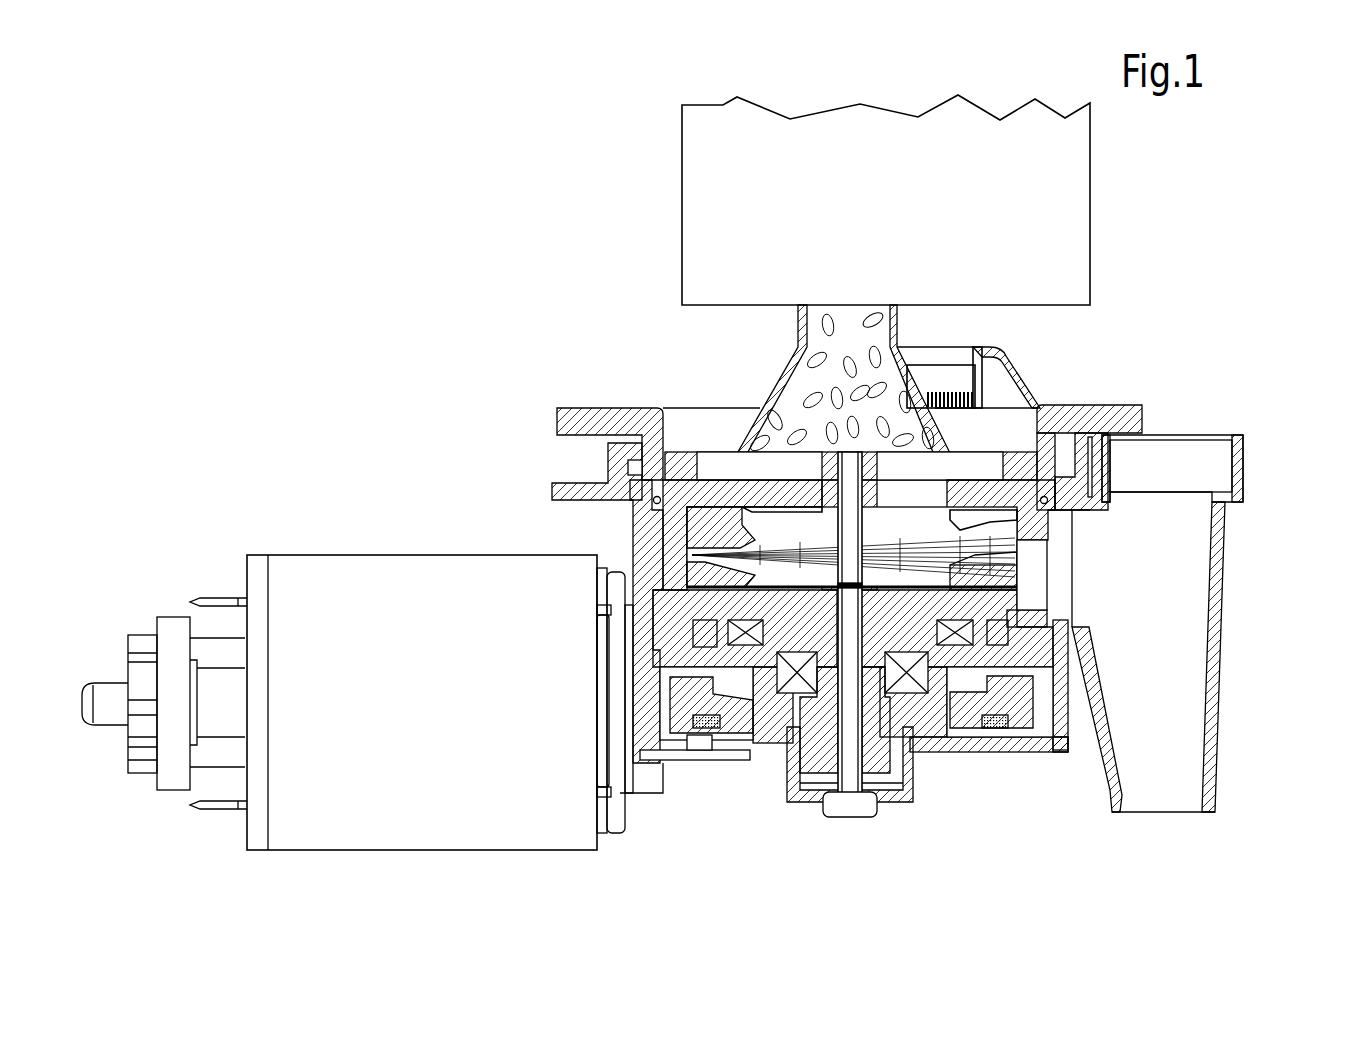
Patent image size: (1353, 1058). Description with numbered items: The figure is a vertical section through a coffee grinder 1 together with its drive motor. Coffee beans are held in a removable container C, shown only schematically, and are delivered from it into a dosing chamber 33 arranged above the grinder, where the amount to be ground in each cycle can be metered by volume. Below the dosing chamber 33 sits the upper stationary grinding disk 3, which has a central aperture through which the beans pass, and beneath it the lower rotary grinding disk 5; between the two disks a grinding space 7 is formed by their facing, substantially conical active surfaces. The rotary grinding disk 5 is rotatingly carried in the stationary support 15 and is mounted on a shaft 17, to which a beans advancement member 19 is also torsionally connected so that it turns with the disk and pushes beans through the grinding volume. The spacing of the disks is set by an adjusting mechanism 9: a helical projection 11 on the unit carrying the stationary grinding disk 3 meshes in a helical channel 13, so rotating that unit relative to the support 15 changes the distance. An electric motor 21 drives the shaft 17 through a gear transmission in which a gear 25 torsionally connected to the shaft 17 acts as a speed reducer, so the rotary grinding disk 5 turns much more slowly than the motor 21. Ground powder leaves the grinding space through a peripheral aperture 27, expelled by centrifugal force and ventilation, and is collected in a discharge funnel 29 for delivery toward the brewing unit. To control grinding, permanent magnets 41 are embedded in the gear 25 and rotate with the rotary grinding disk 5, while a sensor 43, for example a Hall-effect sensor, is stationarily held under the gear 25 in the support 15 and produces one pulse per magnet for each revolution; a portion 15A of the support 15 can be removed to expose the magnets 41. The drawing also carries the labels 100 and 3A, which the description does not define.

The coffee machine 100 is at (1238, 262).
The coffee grinder 1 is at (1134, 345).
The stationary grinding disk 3 is at (1005, 535).
The upper grinding element 3A is at (765, 509).
The rotary grinding disk 5 is at (1040, 582).
The grinding space 7 is at (911, 544).
The adjusting mechanism 9 is at (985, 348).
The helical projection 11 is at (663, 410).
The helical channel 13 is at (620, 470).
The stationary support 15 is at (624, 538).
The portion of the support 15A is at (1062, 746).
The shaft 17 is at (858, 813).
The beans advancement member 19 is at (880, 470).
The electric motor 21 is at (402, 595).
The gear 25 is at (1020, 750).
The peripheral aperture 27 is at (1020, 578).
The discharge funnel 29 is at (1218, 665).
The dosing chamber 33 is at (770, 374).
The permanent magnets 41 is at (708, 721).
The sensor 43 is at (690, 749).
The removable container C is at (713, 225).